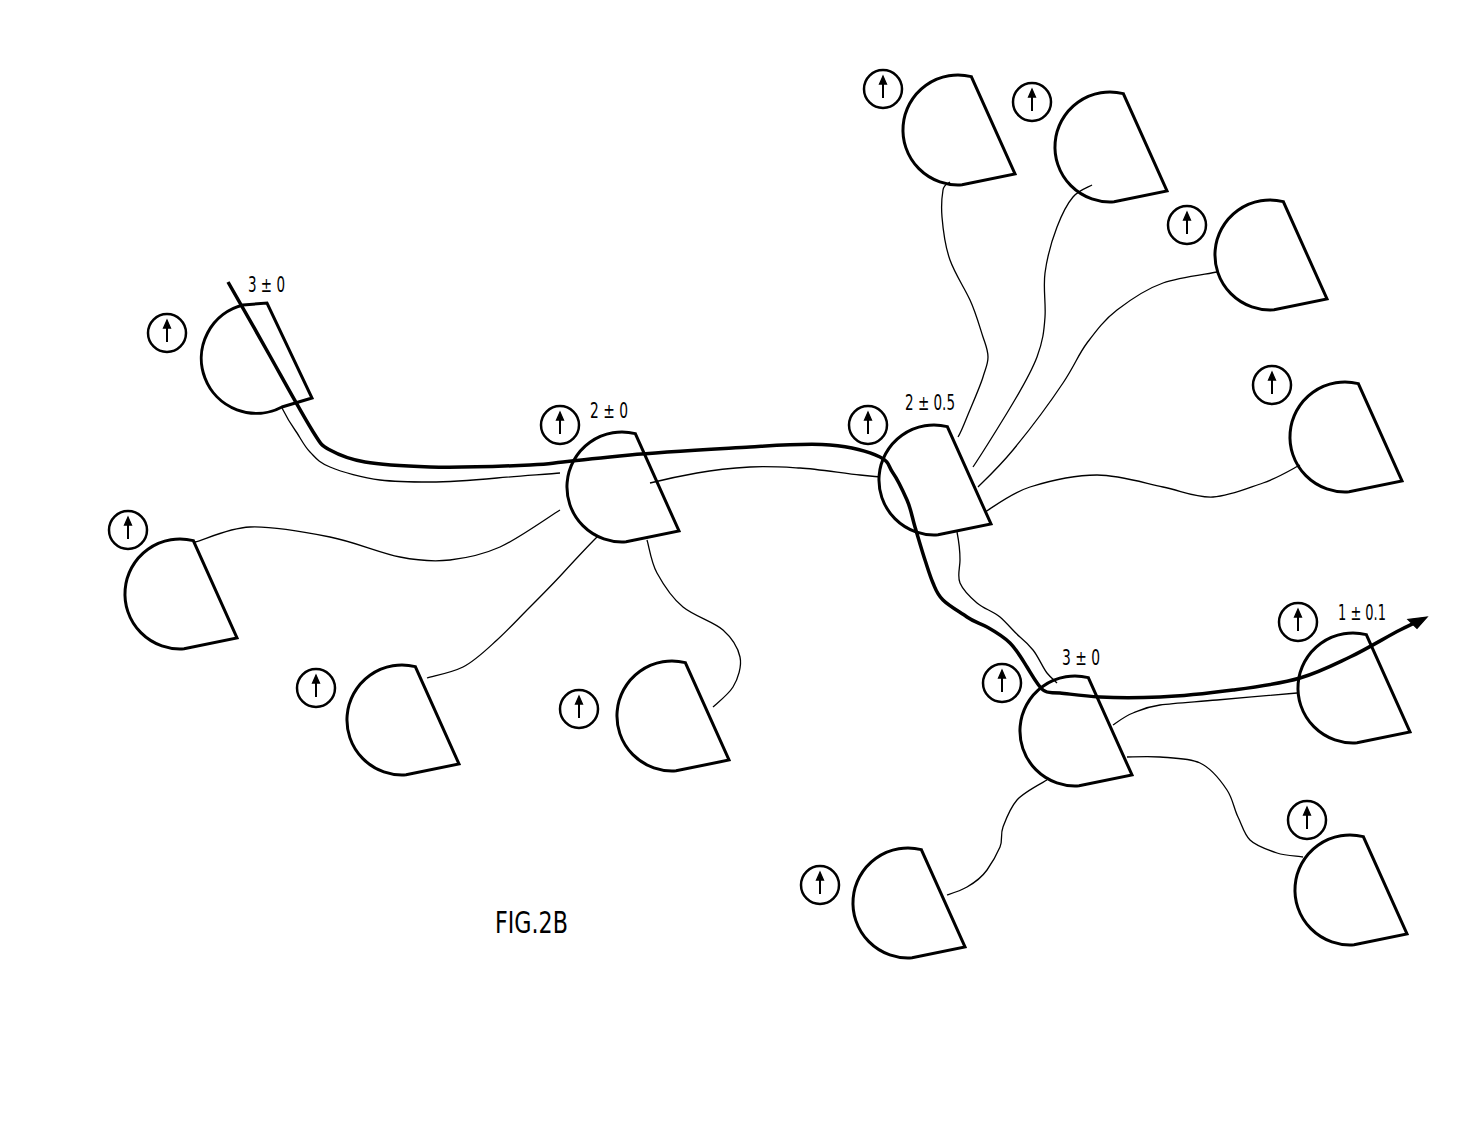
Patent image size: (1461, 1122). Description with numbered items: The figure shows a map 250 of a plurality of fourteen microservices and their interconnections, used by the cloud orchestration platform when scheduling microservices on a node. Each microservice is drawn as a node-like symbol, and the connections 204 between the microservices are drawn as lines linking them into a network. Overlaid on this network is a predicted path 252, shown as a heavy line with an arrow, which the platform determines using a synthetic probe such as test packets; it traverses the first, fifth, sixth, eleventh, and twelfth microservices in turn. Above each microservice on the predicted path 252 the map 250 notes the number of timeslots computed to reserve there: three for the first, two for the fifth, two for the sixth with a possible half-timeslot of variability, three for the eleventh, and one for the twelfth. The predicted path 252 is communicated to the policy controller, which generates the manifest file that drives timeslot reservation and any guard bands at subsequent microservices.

The map 250 is at (515, 201).
The predicted path 252 is at (230, 297).
The connections 204 is at (430, 487).